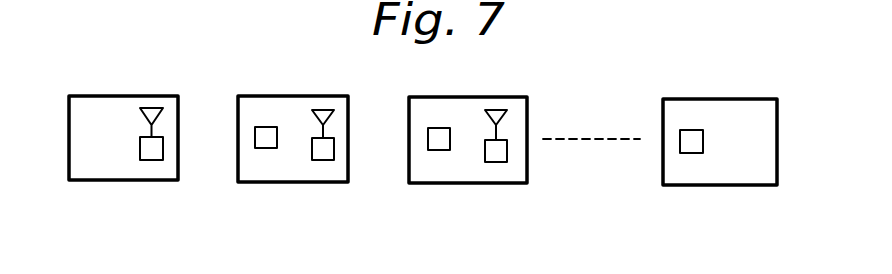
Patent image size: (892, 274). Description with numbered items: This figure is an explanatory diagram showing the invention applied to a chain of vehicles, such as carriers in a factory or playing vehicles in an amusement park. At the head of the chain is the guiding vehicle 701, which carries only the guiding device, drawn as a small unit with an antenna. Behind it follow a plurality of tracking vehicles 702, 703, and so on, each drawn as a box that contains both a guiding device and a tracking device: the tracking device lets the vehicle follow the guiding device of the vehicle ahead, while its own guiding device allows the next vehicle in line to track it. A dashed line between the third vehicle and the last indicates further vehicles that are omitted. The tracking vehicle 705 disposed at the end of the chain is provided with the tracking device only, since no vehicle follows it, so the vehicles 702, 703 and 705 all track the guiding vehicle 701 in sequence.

The guiding vehicle 701 is at (117, 180).
The tracking vehicle 702 is at (333, 182).
The tracking vehicle 703 is at (502, 183).
The tracking vehicle 705 is at (735, 185).